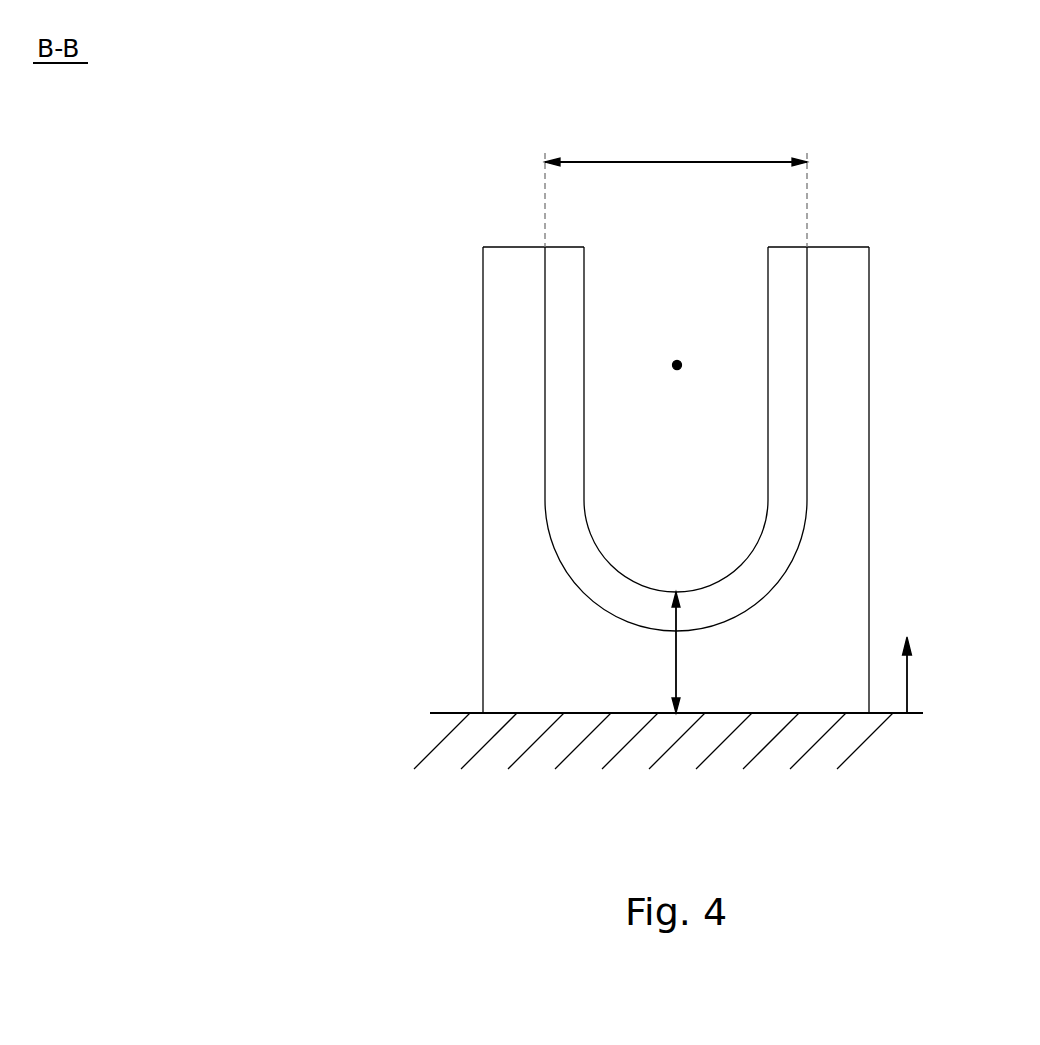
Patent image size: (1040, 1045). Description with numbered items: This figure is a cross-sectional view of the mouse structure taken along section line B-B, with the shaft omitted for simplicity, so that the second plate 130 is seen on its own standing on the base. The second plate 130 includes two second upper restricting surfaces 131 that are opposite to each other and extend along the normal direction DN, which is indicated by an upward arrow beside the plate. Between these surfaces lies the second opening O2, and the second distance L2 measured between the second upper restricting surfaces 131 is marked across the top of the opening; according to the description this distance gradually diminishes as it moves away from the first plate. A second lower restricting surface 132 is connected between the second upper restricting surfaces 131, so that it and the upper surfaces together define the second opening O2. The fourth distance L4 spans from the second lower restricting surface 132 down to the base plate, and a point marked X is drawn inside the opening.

The second plate 130 is at (712, 480).
The second upper restricting surfaces 131 is at (555, 327).
The second lower restricting surface 132 is at (599, 585).
The second distance L2 is at (676, 187).
The fourth distance L4 is at (657, 652).
The second opening O2 is at (674, 305).
The center point X is at (681, 364).
The normal direction DN is at (907, 686).